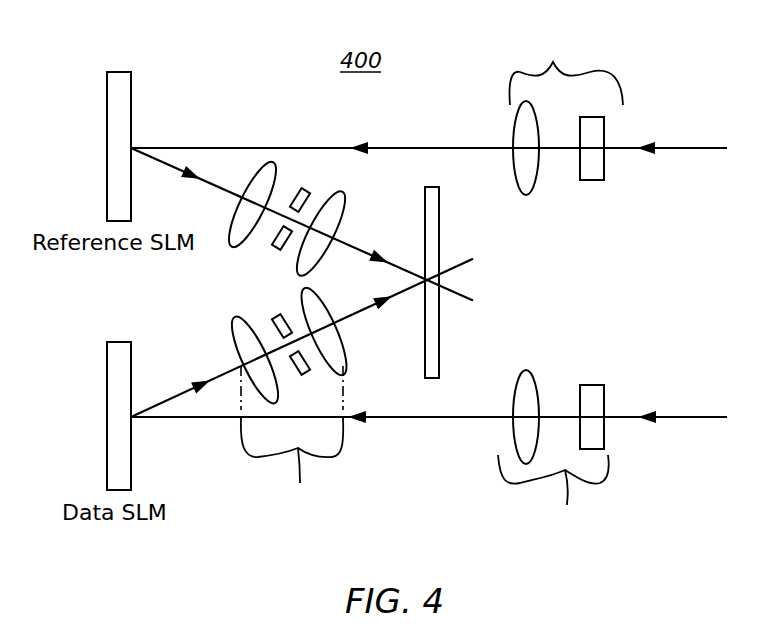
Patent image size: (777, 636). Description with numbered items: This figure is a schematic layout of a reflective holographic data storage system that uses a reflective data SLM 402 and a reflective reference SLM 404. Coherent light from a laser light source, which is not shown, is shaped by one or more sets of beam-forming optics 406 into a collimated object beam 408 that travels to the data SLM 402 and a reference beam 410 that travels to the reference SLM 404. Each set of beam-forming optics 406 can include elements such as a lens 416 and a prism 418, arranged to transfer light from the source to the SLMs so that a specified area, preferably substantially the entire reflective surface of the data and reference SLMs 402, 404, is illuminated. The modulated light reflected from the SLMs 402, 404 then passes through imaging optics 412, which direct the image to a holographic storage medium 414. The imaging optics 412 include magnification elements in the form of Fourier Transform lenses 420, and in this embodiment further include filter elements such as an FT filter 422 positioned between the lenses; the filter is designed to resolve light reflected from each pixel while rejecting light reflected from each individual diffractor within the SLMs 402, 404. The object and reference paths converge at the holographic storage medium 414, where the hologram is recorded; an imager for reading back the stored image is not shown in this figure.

The data SLM 402 is at (117, 342).
The reference SLM 404 is at (117, 72).
The beam-forming optics 406 is at (560, 284).
The object beam 408 is at (212, 419).
The reference beam 410 is at (202, 147).
The imaging optics 412 is at (292, 438).
The holographic storage medium 414 is at (439, 212).
The lens 416 is at (526, 370).
The prism 418 is at (592, 385).
The Fourier Transform lens 420 is at (234, 247).
The FT filter 422 is at (278, 250).